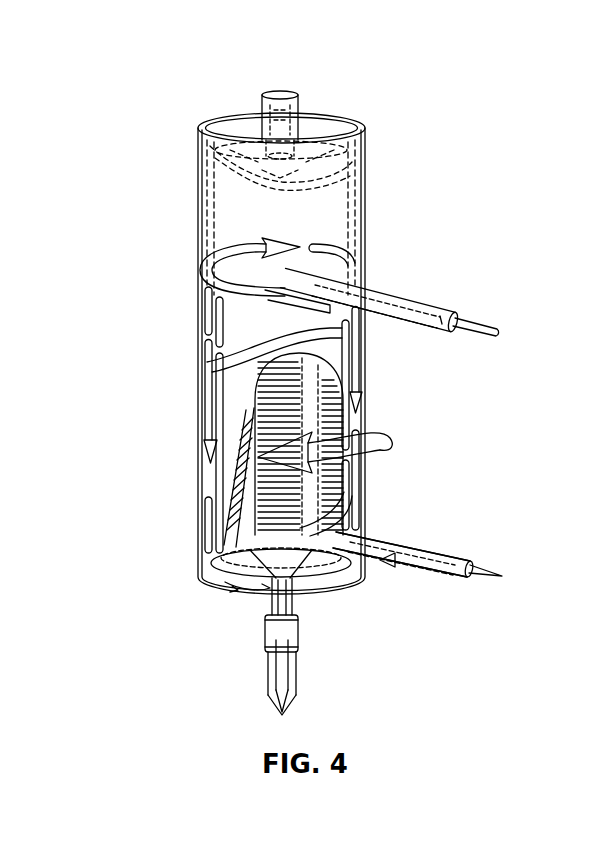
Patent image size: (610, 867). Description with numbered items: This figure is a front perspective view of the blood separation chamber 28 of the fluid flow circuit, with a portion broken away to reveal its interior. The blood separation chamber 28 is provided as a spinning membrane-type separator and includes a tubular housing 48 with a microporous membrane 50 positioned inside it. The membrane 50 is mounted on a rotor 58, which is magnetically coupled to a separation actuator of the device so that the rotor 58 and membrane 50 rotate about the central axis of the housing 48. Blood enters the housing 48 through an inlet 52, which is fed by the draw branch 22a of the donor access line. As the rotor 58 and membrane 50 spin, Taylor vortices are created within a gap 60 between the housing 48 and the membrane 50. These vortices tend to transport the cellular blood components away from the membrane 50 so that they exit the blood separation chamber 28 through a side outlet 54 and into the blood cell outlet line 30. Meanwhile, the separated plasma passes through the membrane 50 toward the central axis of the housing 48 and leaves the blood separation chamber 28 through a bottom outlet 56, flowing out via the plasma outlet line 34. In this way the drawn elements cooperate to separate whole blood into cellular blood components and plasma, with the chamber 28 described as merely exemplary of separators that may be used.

The blood separation chamber 28 is at (358, 104).
The tubular housing 48 is at (202, 194).
The rotor 58 is at (300, 182).
The gap 60 is at (340, 196).
The draw branch 22a is at (375, 290).
The inlet 52 is at (262, 320).
The microporous membrane 50 is at (228, 393).
The side outlet 54 is at (394, 546).
The blood cell outlet line 30 is at (439, 577).
The bottom outlet 56 is at (272, 637).
The plasma outlet line 34 is at (298, 681).